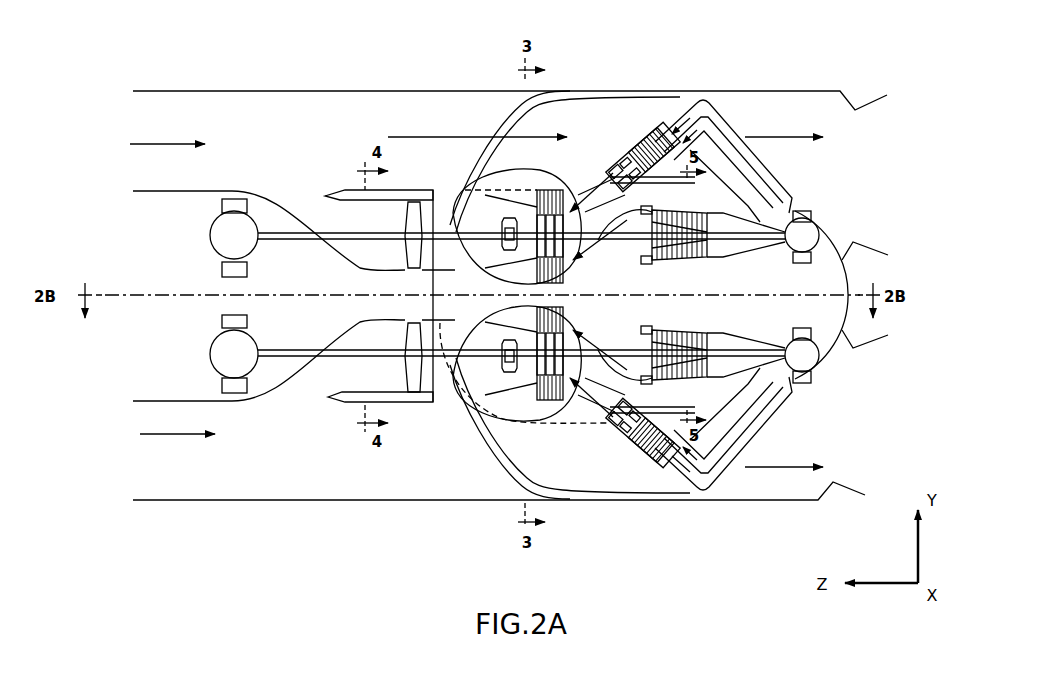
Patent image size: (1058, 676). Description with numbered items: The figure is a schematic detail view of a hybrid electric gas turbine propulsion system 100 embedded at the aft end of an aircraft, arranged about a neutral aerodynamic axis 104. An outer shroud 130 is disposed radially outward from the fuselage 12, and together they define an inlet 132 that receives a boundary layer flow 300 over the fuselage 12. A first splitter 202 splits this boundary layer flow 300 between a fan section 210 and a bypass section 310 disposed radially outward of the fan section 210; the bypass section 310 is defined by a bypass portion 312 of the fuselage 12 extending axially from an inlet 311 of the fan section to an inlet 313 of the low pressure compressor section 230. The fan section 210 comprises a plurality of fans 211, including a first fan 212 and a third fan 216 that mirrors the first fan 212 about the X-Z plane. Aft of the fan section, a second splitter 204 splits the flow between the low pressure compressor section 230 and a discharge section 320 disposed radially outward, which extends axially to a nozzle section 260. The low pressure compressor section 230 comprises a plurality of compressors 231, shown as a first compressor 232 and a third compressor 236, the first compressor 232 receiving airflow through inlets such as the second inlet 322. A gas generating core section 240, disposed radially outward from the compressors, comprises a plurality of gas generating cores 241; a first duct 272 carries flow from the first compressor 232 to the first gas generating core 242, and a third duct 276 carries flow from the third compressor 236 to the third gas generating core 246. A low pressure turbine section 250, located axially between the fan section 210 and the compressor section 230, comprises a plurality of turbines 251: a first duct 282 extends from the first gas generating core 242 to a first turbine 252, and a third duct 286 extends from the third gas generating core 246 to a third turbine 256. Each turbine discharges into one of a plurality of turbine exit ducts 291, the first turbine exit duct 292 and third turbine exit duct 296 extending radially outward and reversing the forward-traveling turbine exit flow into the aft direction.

The hybrid electric gas turbine propulsion system 100 is at (142, 70).
The outer shroud 130 is at (384, 90).
The inlet 132 is at (138, 470).
The boundary layer flow 300 is at (178, 438).
The fuselage 12 is at (142, 369).
The fan section 210 is at (400, 223).
The plurality of fans 211 is at (408, 338).
The first fan 212 is at (420, 205).
The third fan 216 is at (415, 393).
The inlet of the fan section 311 is at (303, 207).
The first splitter 202 is at (335, 401).
The bypass portion 312 is at (400, 194).
The bypass section 310 is at (419, 127).
The inlet of the LPC section 313 is at (597, 97).
The third turbine exit duct 296 is at (485, 420).
The first turbine exit duct 292 is at (482, 177).
The plurality of turbine exit ducts 291 is at (502, 333).
The first turbine 252 is at (531, 183).
The low pressure turbine (LPT) section 250 is at (550, 410).
The plurality of turbines 251 is at (560, 400).
The third turbine 256 is at (548, 400).
The second splitter 204 is at (585, 180).
The first duct 282 is at (600, 250).
The third duct 286 is at (598, 340).
The discharge section 320 is at (614, 129).
The first gas generating core 242 is at (652, 147).
The third gas generating core 246 is at (648, 470).
The gas generating core section 240 is at (633, 452).
The plurality of gas generating cores 241 is at (677, 456).
The second inlet 322 is at (677, 130).
The first duct 272 is at (730, 125).
The third duct 276 is at (737, 460).
The first compressor 232 is at (678, 212).
The plurality of compressors 231 is at (700, 252).
The low pressure compressor (LPC) section 230 is at (708, 331).
The third compressor 236 is at (658, 336).
The nozzle section 260 is at (838, 113).
The neutral aerodynamic axis 104 is at (830, 293).